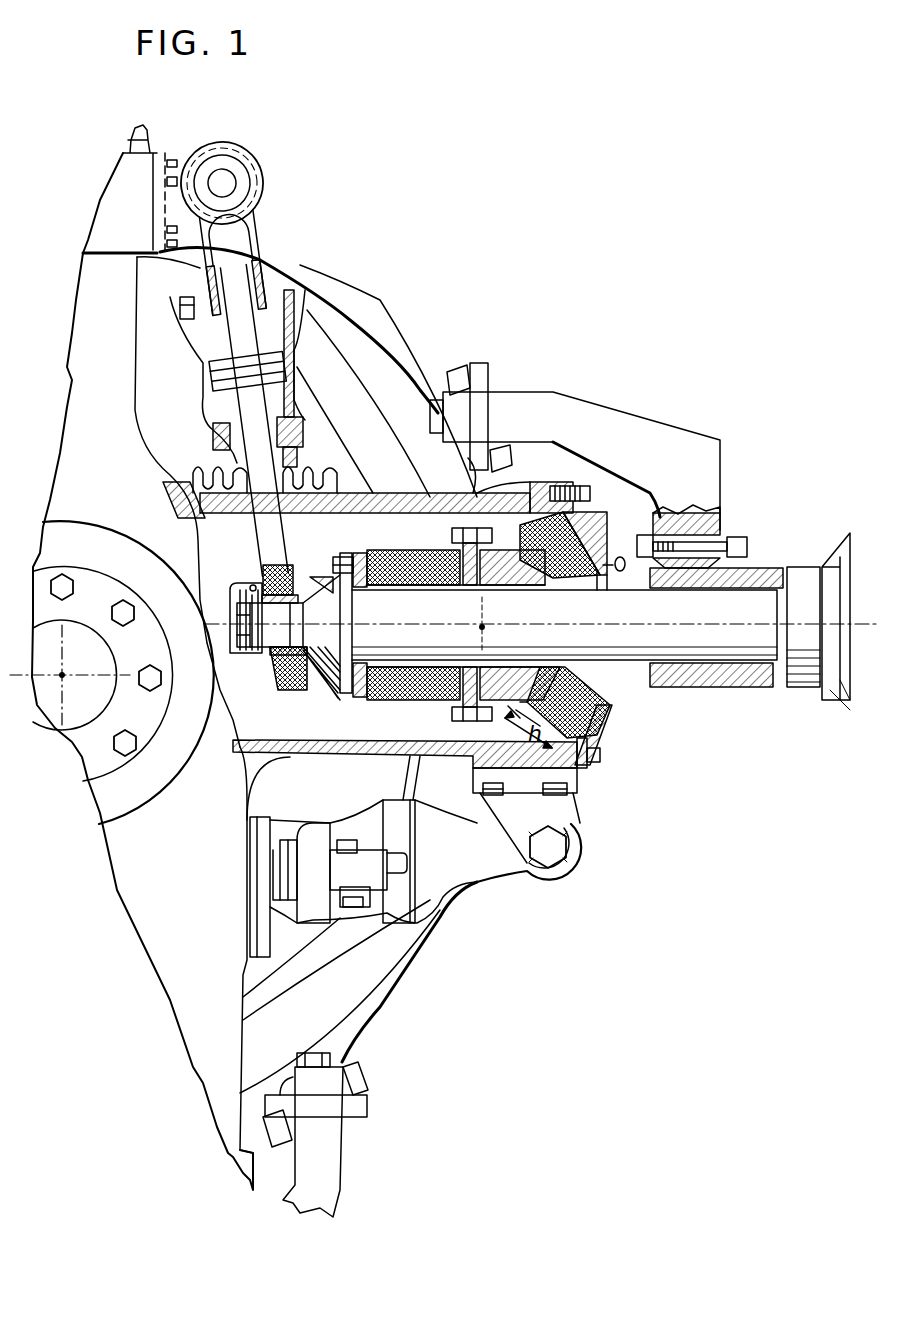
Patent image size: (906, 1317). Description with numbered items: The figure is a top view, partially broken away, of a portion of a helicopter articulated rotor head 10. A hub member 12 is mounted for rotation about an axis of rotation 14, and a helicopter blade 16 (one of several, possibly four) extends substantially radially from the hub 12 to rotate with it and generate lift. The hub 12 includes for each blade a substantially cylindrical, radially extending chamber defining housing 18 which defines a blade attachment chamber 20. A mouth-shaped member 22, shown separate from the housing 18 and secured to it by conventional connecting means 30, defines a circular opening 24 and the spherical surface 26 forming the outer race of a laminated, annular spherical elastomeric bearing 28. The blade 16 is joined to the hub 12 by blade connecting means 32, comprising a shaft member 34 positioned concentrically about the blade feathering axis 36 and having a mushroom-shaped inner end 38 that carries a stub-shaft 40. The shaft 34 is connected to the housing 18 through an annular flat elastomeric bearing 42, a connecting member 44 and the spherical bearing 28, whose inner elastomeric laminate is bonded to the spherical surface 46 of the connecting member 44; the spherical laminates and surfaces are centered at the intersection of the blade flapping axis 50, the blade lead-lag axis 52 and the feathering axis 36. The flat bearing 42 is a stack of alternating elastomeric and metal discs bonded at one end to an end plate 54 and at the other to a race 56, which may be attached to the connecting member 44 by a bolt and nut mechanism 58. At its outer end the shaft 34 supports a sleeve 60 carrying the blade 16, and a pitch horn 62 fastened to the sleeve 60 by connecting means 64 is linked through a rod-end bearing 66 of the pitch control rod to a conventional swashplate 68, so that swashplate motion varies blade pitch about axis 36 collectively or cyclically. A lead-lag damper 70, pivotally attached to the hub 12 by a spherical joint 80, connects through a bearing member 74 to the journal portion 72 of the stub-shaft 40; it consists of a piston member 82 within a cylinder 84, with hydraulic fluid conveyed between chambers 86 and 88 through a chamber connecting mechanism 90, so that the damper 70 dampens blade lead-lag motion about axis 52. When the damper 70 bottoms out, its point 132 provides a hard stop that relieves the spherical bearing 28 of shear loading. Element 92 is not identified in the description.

The helicopter articulated rotor head 10 is at (433, 108).
The hub member 12 is at (361, 475).
The axis of rotation 14 is at (63, 675).
The helicopter blade 16 is at (840, 555).
The chamber defining housing 18 is at (95, 320).
The blade attachment chamber 20 is at (385, 737).
The mouth-shaped member 22 is at (598, 520).
The circular opening 24 is at (612, 687).
The spherical surface 26 is at (598, 708).
The spherical elastomeric bearing 28 is at (540, 513).
The connecting means 30 is at (593, 493).
The blade connecting means 32 is at (758, 565).
The shaft member 34 is at (752, 680).
The blade feathering axis 36 is at (715, 625).
The mushroom-shaped inner end 38 is at (340, 685).
The stub-shaft 40 is at (330, 595).
The flat elastomeric bearing 42 is at (393, 557).
The connecting member 44 is at (503, 568).
The spherical surface 46 is at (545, 585).
The blade flapping axis 50 is at (483, 600).
The blade lead-lag axis 52 is at (484, 627).
The end plate 54 is at (362, 550).
The race 56 is at (445, 753).
The bolt and nut mechanism 58 is at (468, 545).
The sleeve 60 is at (717, 675).
The pitch horn 62 is at (337, 1153).
The connecting means 64 is at (737, 545).
The rod-end bearing 66 is at (482, 370).
The swashplate 68 is at (400, 375).
The lead-lag damper 70 is at (292, 358).
The journal portion 72 is at (272, 655).
The bearing member 74 is at (262, 572).
The spherical joint 80 is at (232, 174).
The piston member 82 is at (205, 405).
The cylinder 84 is at (300, 365).
The chamber 86 is at (318, 325).
The chamber 88 is at (222, 412).
The chamber connecting mechanism 90 is at (322, 865).
The lever 92 is at (277, 533).
The point of bottomed-out damper 132 is at (283, 625).